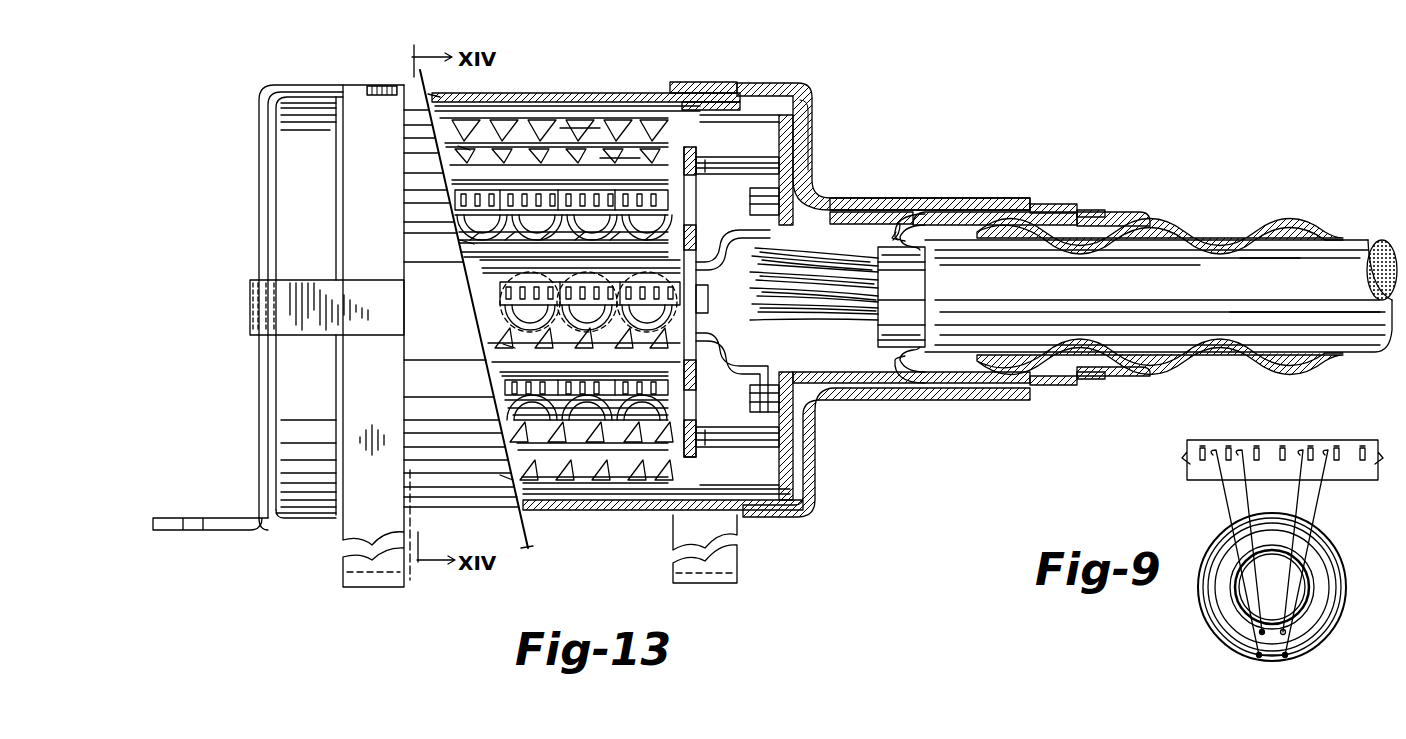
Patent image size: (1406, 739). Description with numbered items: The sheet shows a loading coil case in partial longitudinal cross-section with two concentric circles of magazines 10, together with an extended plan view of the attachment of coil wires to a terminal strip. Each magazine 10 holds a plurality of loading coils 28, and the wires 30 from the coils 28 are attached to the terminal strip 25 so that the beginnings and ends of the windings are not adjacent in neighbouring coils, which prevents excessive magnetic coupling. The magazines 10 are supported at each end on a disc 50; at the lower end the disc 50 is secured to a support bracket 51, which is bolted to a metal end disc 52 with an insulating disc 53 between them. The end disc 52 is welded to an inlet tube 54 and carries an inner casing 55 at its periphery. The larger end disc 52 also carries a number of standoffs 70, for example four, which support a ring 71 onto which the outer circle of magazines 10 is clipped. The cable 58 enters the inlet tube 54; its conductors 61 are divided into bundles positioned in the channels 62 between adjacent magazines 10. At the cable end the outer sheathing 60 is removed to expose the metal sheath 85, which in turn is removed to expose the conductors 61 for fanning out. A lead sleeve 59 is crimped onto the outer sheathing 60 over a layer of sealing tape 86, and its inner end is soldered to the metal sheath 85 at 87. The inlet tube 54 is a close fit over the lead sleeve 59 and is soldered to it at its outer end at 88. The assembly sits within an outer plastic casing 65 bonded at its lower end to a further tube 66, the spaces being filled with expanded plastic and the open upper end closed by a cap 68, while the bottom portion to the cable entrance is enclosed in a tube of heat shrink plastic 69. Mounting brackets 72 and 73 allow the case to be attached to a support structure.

In FIG. 13, the magazine 10 is at (632, 160).
In FIG. 9, the terminal strip 25 is at (1330, 440).
In FIG. 9, the loading coil 28 is at (1330, 580).
In FIG. 9, the wires 30 is at (1235, 496).
In FIG. 13, the disc 50 is at (700, 240).
In FIG. 13, the support bracket 51 is at (776, 198).
In FIG. 13, the end disc 52 is at (795, 152).
In FIG. 13, the insulating disc 53 is at (812, 125).
In FIG. 13, the inlet tube 54 is at (935, 214).
In FIG. 13, the inner casing 55 is at (760, 95).
In FIG. 13, the cable 58 is at (1362, 252).
In FIG. 13, the lead sleeve 59 is at (1115, 218).
In FIG. 13, the cable sheathing 60 is at (940, 378).
In FIG. 13, the conductors 61 is at (830, 312).
In FIG. 13, the channel 62 is at (518, 182).
In FIG. 13, the outer plastic casing 65 is at (566, 96).
In FIG. 13, the further tube 66 is at (860, 205).
In FIG. 13, the cap 68 is at (312, 108).
In FIG. 13, the heat shrink plastic tube 69 is at (810, 100).
In FIG. 13, the standoff 70 is at (752, 166).
In FIG. 13, the ring 71 is at (690, 150).
In FIG. 13, the mounting bracket 72 is at (735, 561).
In FIG. 13, the mounting bracket 73 is at (347, 568).
In FIG. 13, the metal sheath 85 is at (885, 350).
In FIG. 13, the sealing tape 86 is at (1108, 366).
In FIG. 13, the solder joint 87 is at (900, 218).
In FIG. 13, the solder joint 88 is at (1080, 212).